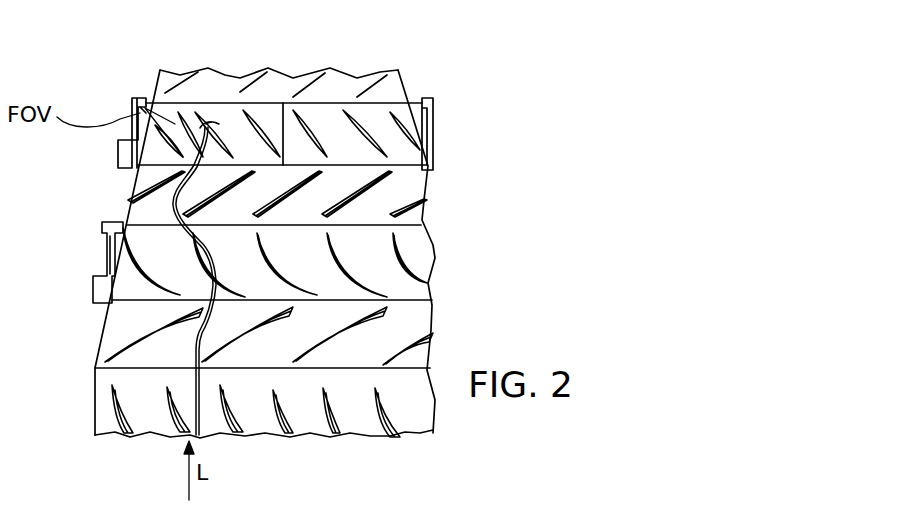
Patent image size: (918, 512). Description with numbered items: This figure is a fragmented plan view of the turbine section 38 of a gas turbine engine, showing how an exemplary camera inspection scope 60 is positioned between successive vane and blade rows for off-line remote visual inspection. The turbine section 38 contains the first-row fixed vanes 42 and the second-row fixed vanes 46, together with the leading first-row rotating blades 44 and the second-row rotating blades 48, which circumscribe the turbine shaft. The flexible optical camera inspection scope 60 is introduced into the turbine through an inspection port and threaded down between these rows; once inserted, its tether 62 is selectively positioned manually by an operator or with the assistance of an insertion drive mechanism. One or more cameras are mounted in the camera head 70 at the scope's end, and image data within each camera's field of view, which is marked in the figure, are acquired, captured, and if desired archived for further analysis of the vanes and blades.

The turbine section 38 is at (428, 34).
The Row 1 fixed vane 42 is at (432, 424).
The Row 1 rotating blade 44 is at (419, 343).
The Row 2 fixed vane 46 is at (412, 256).
The Row 2 rotating blade 48 is at (372, 200).
The optical camera inspection scope 60 is at (198, 264).
The tether 62 is at (158, 212).
The camera head 70 is at (208, 127).